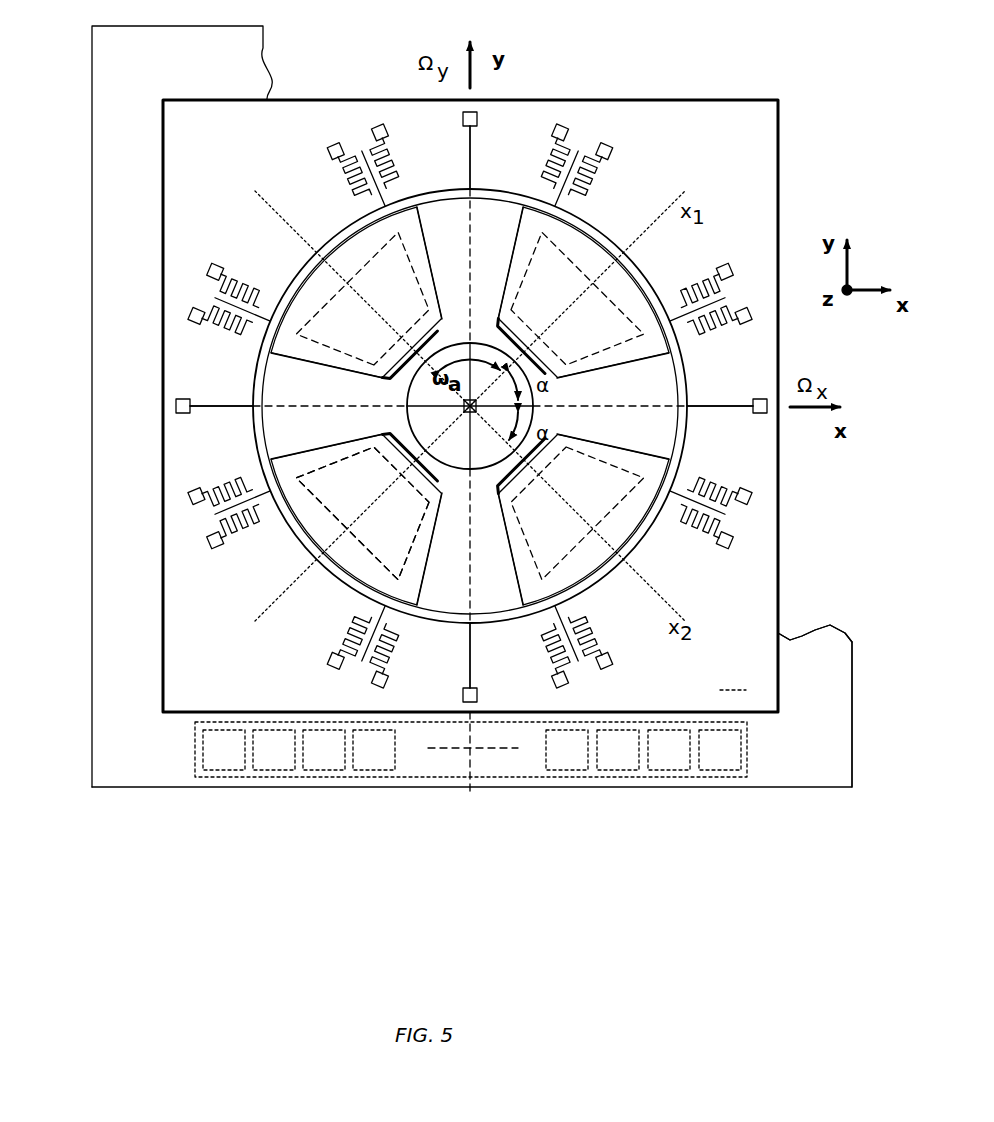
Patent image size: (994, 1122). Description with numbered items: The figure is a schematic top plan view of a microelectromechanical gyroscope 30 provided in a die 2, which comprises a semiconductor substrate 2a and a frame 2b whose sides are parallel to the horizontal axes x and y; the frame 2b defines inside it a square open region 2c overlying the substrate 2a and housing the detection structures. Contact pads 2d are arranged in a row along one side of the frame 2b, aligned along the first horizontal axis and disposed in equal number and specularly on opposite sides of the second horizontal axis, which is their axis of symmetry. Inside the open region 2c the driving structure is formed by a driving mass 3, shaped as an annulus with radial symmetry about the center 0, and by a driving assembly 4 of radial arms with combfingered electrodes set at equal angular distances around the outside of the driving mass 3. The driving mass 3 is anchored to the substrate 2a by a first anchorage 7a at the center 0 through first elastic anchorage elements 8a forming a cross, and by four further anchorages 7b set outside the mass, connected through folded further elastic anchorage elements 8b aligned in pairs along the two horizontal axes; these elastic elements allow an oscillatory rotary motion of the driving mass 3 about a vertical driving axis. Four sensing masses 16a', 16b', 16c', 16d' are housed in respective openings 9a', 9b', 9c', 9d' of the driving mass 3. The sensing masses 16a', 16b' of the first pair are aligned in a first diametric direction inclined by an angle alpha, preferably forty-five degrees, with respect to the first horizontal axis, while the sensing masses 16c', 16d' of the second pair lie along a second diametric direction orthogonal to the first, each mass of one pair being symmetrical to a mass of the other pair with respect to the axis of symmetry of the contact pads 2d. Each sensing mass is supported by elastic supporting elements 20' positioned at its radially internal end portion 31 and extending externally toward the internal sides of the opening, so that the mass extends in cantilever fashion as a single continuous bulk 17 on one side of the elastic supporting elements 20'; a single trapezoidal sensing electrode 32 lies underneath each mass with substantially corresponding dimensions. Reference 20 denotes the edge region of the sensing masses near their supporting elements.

The microelectromechanical gyroscope 30 is at (835, 103).
The die 2 is at (88, 512).
The substrate 2a is at (733, 676).
The frame 2b is at (853, 675).
The open region 2c is at (775, 603).
The contact pads 2d is at (220, 764).
The driving mass 3 is at (337, 252).
The driving assembly 4 is at (230, 248).
The first anchorage 7a is at (464, 410).
The further anchorages 7b is at (479, 118).
The first elastic anchorage elements 8a is at (470, 440).
The further elastic anchorage elements 8b is at (473, 170).
The origin 0 is at (476, 410).
The sensing mass 16a' is at (368, 507).
The sensing mass 16b' is at (571, 304).
The sensing mass 16c' is at (368, 304).
The sensing mass 16d' is at (571, 507).
The sensing electrode 17 is at (337, 468).
The mass edge 20 is at (368, 451).
The elastic supporting elements 20' is at (575, 333).
The end portion 31 is at (530, 340).
The sensing electrode 32 is at (530, 243).
The opening 9a' is at (442, 549).
The opening 9b' is at (613, 378).
The opening 9c' is at (439, 260).
The opening 9d' is at (501, 555).